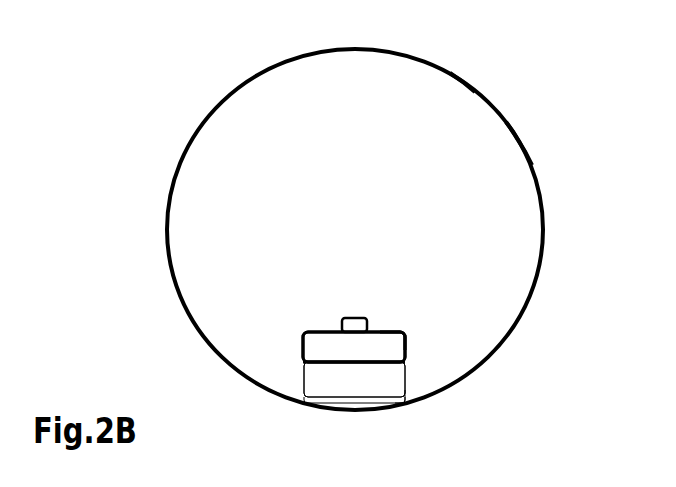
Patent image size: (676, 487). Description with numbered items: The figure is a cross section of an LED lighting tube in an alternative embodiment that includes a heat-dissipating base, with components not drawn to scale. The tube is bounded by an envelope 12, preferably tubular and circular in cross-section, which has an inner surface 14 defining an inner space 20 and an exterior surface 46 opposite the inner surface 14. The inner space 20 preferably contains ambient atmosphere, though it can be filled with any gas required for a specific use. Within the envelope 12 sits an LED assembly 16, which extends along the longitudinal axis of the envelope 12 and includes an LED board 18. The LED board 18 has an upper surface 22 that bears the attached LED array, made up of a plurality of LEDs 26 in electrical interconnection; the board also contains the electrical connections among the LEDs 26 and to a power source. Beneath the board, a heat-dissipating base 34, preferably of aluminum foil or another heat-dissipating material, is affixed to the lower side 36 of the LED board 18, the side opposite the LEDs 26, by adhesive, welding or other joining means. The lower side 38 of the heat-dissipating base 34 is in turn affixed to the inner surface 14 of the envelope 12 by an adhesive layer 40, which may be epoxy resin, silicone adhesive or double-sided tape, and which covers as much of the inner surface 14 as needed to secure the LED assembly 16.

The envelope 12 is at (541, 197).
The inner surface 14 is at (500, 122).
The LED assembly 16 is at (407, 340).
The LED board 18 is at (320, 337).
The inner space 20 is at (505, 162).
The upper surface 22 is at (393, 328).
The LEDs 26 is at (353, 323).
The heat-dissipating base 34 is at (323, 387).
The lower side 36 is at (305, 362).
The lower side 38 is at (408, 402).
The adhesive layer 40 is at (357, 404).
The exterior surface 46 is at (463, 79).